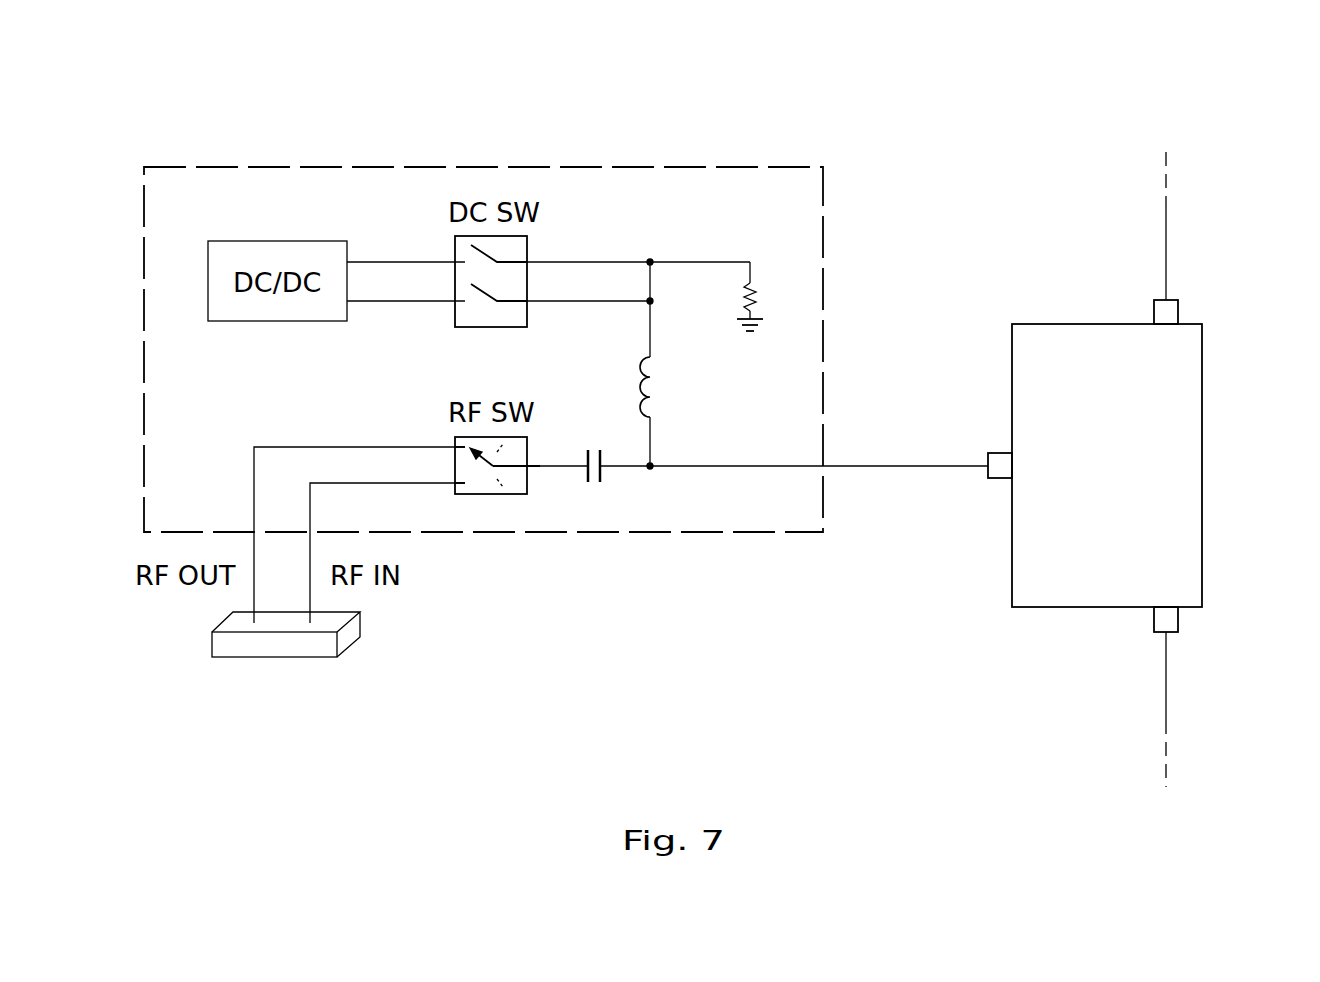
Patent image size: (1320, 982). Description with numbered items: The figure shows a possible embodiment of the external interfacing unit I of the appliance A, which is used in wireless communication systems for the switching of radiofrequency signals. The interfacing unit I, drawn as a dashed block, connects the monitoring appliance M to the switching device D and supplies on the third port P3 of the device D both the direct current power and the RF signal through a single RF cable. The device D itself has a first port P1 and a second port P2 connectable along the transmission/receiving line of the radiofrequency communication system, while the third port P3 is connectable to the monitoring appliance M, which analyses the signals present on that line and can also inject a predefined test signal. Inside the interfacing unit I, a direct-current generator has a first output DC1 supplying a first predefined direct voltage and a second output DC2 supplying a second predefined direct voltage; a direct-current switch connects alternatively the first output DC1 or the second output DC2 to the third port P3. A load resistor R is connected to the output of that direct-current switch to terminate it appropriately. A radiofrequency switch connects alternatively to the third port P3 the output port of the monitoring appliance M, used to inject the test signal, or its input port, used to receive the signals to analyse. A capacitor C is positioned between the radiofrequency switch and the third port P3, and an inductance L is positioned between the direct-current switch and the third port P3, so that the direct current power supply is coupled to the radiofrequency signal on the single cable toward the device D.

The interfacing unit I is at (248, 167).
The appliance A is at (937, 78).
The first output DC1 is at (406, 246).
The second output DC2 is at (406, 317).
The load resistor R is at (761, 296).
The inductance L is at (661, 411).
The capacitor C is at (764, 484).
The monitoring appliance M is at (348, 641).
The switching device D is at (1122, 479).
The first port P1 is at (1158, 313).
The second port P2 is at (1173, 620).
The third port P3 is at (1002, 468).